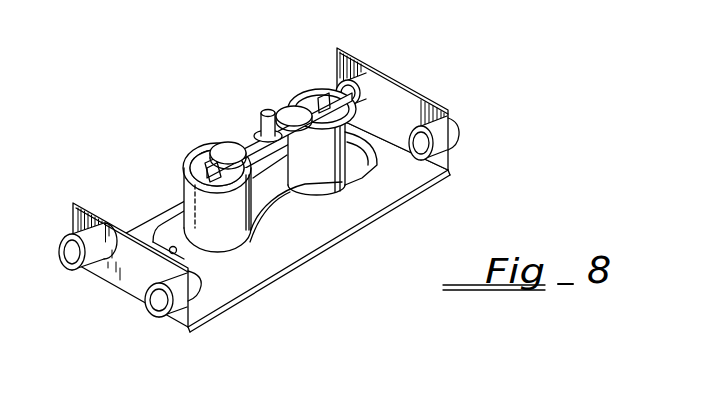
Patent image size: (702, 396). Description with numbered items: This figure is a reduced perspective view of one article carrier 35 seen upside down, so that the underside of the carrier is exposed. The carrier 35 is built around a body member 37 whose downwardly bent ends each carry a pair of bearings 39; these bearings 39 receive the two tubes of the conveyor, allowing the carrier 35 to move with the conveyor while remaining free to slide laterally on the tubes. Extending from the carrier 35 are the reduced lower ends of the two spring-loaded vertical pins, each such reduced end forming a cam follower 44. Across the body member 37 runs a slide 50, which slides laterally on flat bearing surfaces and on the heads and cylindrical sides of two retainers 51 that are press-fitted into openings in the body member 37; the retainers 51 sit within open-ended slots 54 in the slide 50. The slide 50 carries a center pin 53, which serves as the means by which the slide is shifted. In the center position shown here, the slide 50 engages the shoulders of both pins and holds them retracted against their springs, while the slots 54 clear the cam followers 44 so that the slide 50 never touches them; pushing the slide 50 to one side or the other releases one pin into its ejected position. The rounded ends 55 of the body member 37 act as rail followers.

The article carrier 35 is at (343, 235).
The body member 37 is at (180, 168).
The bearings 39 is at (358, 85).
The cam follower 44 is at (361, 108).
The slide 50 is at (288, 147).
The retainers 51 is at (212, 158).
The center pin 53 is at (266, 114).
The open-ended slots 54 is at (243, 143).
The rounded ends 55 is at (200, 232).